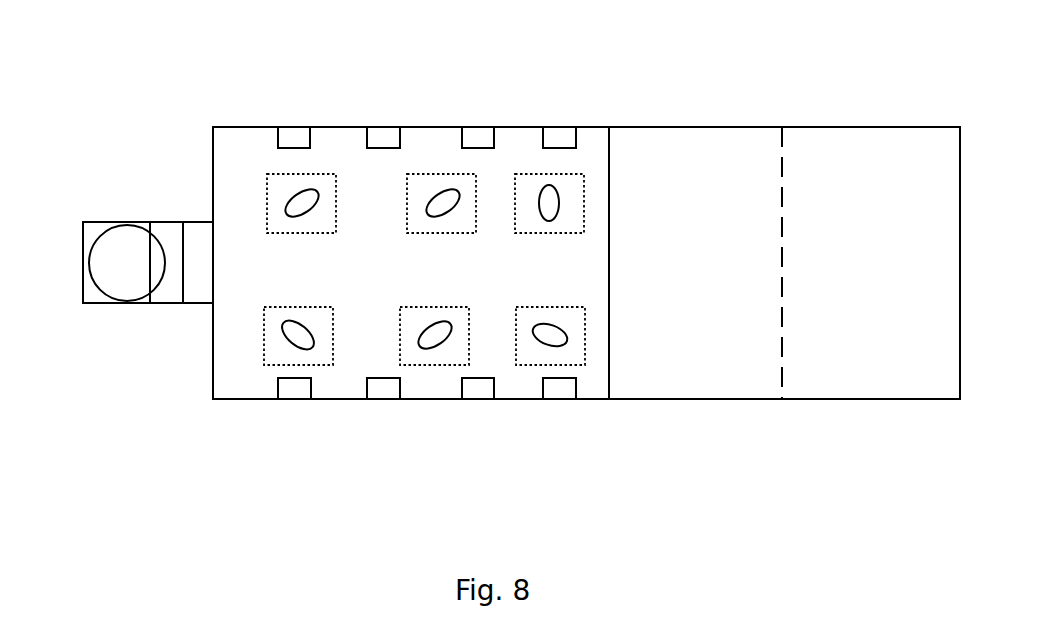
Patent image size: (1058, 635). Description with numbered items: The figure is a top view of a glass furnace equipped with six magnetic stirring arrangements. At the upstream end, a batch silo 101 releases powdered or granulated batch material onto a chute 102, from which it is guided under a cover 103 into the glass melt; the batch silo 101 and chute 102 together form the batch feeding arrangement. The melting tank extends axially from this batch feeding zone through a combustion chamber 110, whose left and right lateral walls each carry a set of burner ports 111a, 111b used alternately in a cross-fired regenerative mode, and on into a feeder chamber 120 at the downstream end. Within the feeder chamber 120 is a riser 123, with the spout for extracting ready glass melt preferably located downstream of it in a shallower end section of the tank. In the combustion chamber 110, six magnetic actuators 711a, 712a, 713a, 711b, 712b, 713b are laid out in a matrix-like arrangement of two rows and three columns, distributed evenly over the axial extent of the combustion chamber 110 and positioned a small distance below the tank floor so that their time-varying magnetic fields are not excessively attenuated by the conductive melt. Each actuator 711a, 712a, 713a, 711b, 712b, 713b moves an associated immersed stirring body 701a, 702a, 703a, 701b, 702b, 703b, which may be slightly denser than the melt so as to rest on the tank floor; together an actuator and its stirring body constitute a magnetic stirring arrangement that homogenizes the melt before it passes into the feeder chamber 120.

The batch silo 101 is at (130, 225).
The chute 102 is at (88, 222).
The cover 103 is at (200, 222).
The combustion chamber 110 is at (470, 282).
The burner ports 111a is at (550, 127).
The burner ports 111b is at (547, 399).
The feeder chamber 120 is at (735, 287).
The riser 123 is at (782, 362).
The stirring body 701a is at (283, 207).
The stirring body 702a is at (427, 208).
The stirring body 703a is at (560, 207).
The stirring body 701b is at (283, 334).
The stirring body 702b is at (427, 328).
The stirring body 703b is at (568, 335).
The magnetic actuator 711a is at (287, 175).
The magnetic actuator 712a is at (407, 192).
The magnetic actuator 713a is at (583, 182).
The magnetic actuator 711b is at (264, 358).
The magnetic actuator 712b is at (400, 335).
The magnetic actuator 713b is at (585, 347).